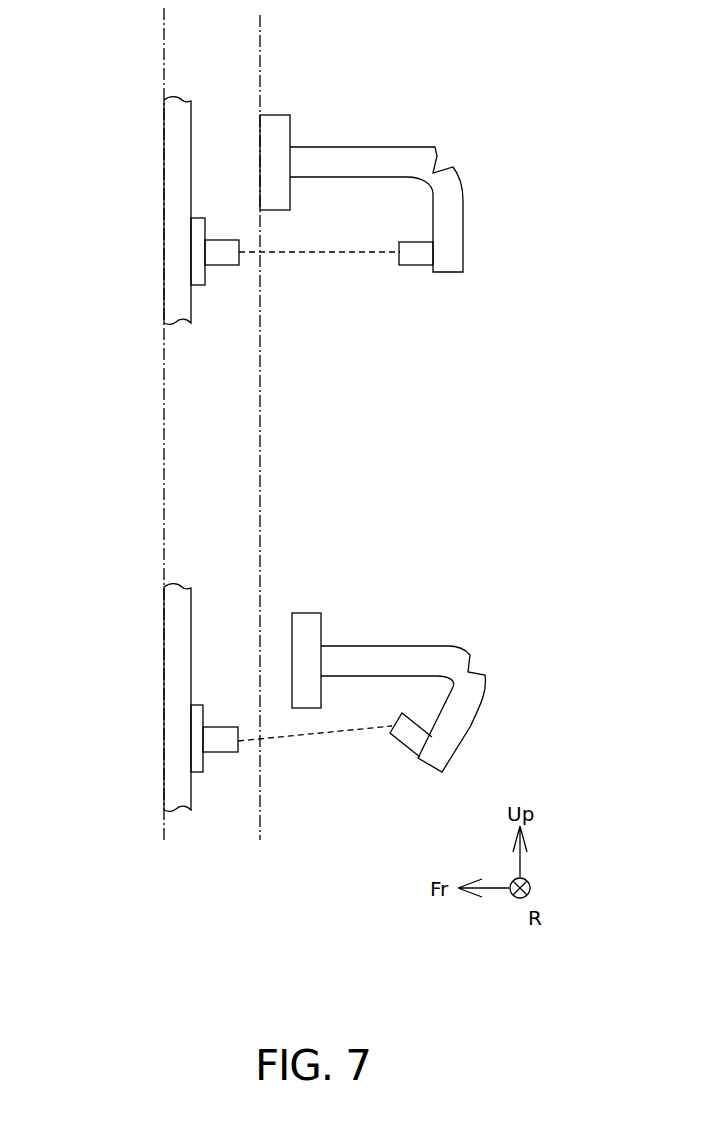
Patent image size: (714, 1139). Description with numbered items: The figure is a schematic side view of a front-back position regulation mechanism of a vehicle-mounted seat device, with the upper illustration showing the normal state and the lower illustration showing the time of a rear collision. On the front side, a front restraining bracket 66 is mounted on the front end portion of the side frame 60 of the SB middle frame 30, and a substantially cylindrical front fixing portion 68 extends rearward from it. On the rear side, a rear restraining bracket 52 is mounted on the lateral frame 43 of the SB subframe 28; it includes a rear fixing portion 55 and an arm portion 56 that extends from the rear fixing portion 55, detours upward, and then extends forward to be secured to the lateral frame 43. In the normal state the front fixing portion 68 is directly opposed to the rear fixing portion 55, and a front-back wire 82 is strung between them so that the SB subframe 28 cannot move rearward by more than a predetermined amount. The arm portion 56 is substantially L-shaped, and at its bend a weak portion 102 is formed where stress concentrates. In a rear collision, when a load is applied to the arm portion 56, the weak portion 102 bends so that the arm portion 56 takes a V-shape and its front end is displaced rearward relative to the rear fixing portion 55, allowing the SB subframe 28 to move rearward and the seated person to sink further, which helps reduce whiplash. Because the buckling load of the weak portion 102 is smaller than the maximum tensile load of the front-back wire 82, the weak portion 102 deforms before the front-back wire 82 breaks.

The side frame 60 is at (124, 454).
The SB middle frame 30 is at (172, 137).
The front restraining bracket 66 is at (197, 250).
The front fixing portion 68 is at (220, 258).
The front-back wire 82 is at (315, 258).
The lateral frame 43 is at (326, 368).
The SB subframe 28 is at (275, 112).
The rear restraining bracket 52 is at (426, 414).
The arm portion 56 is at (426, 435).
The weak portion 102 is at (366, 152).
The rear fixing portion 55 is at (414, 266).